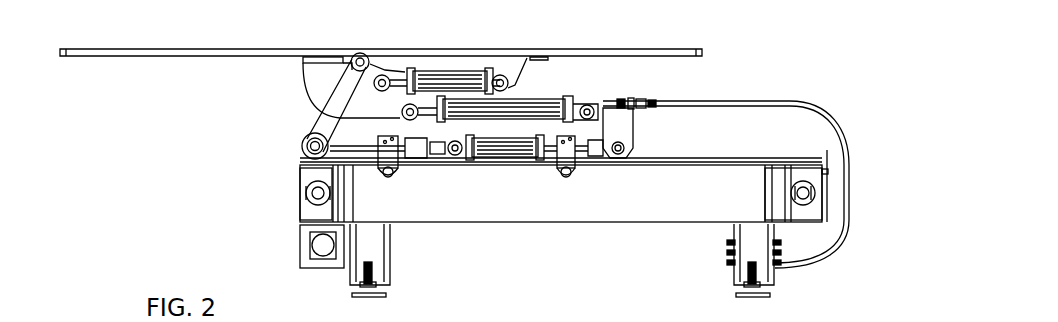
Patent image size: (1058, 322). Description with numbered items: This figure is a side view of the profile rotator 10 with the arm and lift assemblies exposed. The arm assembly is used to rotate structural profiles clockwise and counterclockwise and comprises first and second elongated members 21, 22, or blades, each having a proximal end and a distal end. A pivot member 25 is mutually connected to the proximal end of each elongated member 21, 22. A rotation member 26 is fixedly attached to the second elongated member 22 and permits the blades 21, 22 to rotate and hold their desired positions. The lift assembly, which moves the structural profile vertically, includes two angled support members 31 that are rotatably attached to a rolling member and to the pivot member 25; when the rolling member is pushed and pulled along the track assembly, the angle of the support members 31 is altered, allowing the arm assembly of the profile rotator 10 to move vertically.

The profile rotator 10 is at (757, 68).
The first elongated member 21 is at (556, 50).
The second elongated member 22 is at (200, 50).
The pivot member 25 is at (365, 52).
The rotation member 26 is at (328, 70).
The angled support members 31 is at (325, 127).